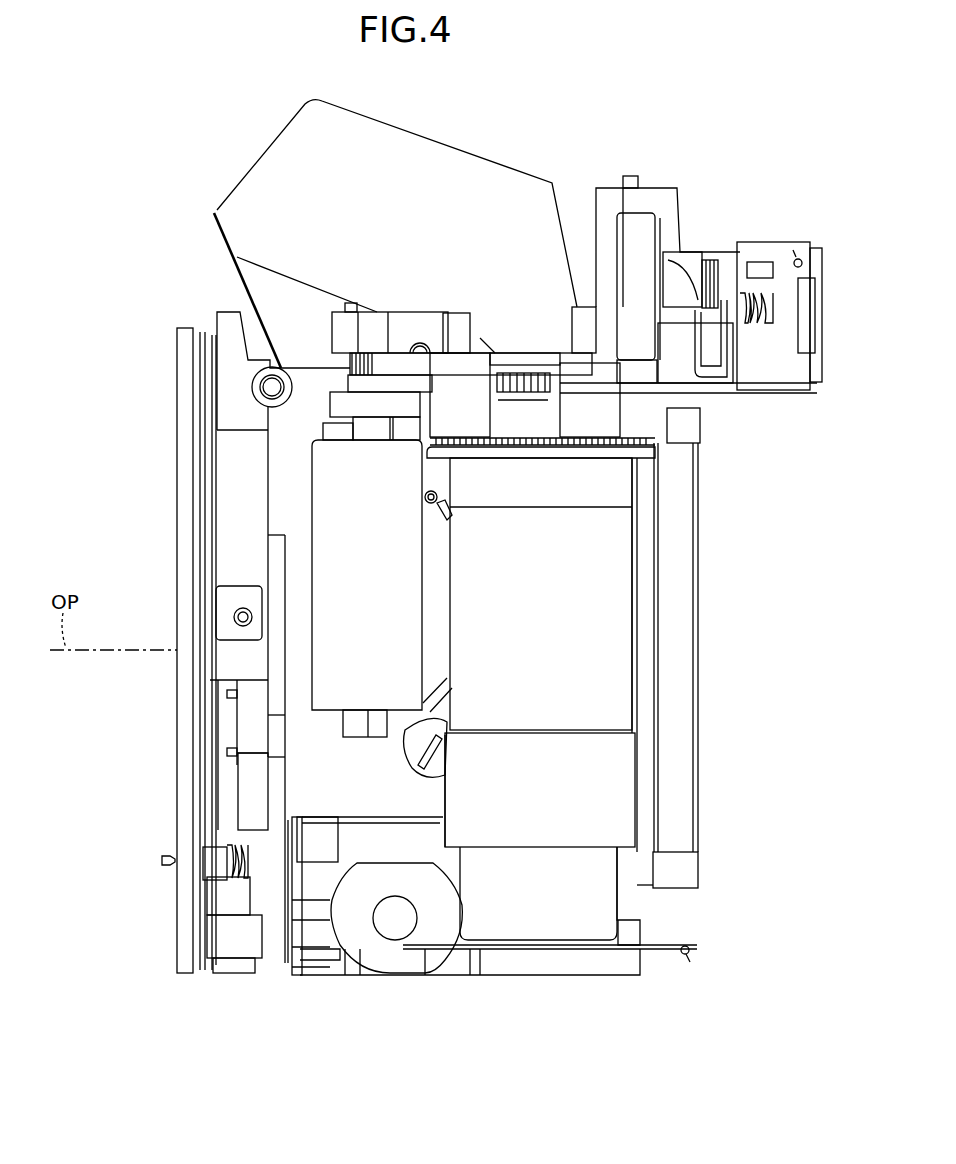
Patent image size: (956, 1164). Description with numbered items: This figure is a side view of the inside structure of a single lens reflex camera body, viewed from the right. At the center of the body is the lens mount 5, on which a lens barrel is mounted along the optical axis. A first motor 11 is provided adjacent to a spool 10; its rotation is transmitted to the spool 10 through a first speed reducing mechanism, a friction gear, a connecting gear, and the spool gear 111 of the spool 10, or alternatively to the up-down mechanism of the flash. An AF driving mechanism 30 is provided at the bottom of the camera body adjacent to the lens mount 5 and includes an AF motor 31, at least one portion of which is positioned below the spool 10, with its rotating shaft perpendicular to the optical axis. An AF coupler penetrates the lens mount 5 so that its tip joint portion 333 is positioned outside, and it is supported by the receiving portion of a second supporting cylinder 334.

The lens mount 5 is at (176, 695).
The spool 10 is at (612, 671).
The first motor 11 is at (335, 452).
The spool gear 111 is at (580, 447).
The AF driving mechanism 30 is at (222, 982).
The AF motor 31 is at (372, 962).
The joint portion 333 is at (161, 860).
The second supporting cylinder 334 is at (215, 860).